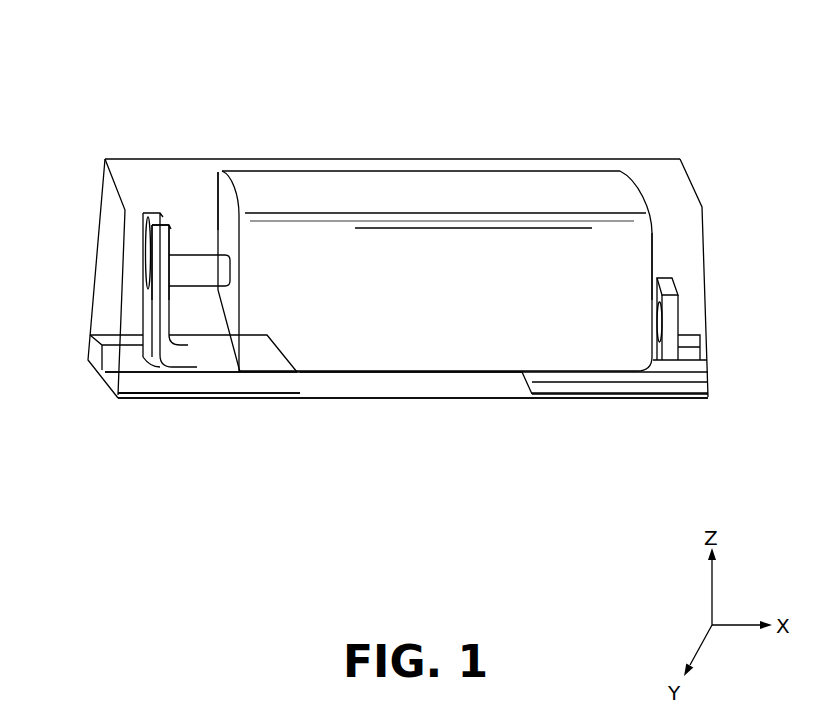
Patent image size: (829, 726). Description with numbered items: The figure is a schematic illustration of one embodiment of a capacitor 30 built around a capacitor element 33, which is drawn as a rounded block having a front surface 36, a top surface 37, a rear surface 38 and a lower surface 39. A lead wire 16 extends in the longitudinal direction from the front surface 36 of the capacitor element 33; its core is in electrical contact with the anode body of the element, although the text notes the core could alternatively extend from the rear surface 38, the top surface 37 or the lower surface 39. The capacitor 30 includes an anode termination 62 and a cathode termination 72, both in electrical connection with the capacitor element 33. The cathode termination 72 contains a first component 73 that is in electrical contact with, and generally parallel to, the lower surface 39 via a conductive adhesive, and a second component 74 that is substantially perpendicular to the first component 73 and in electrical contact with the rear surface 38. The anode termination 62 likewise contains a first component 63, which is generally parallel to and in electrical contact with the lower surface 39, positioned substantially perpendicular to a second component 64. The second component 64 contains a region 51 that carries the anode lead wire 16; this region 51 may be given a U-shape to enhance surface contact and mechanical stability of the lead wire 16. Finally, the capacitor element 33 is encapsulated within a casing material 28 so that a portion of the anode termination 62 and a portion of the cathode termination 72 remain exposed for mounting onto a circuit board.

The lead wire 16 is at (199, 276).
The casing material 28 is at (133, 175).
The capacitor 30 is at (490, 124).
The capacitor element 33 is at (456, 310).
The front surface 36 is at (226, 205).
The top surface 37 is at (508, 198).
The rear surface 38 is at (650, 242).
The lower surface 39 is at (418, 373).
The region 51 is at (192, 242).
The anode termination 62 is at (195, 410).
The first component 63 is at (138, 392).
The second component 64 is at (150, 296).
The cathode termination 72 is at (636, 412).
The first component 73 is at (563, 388).
The second component 74 is at (672, 313).